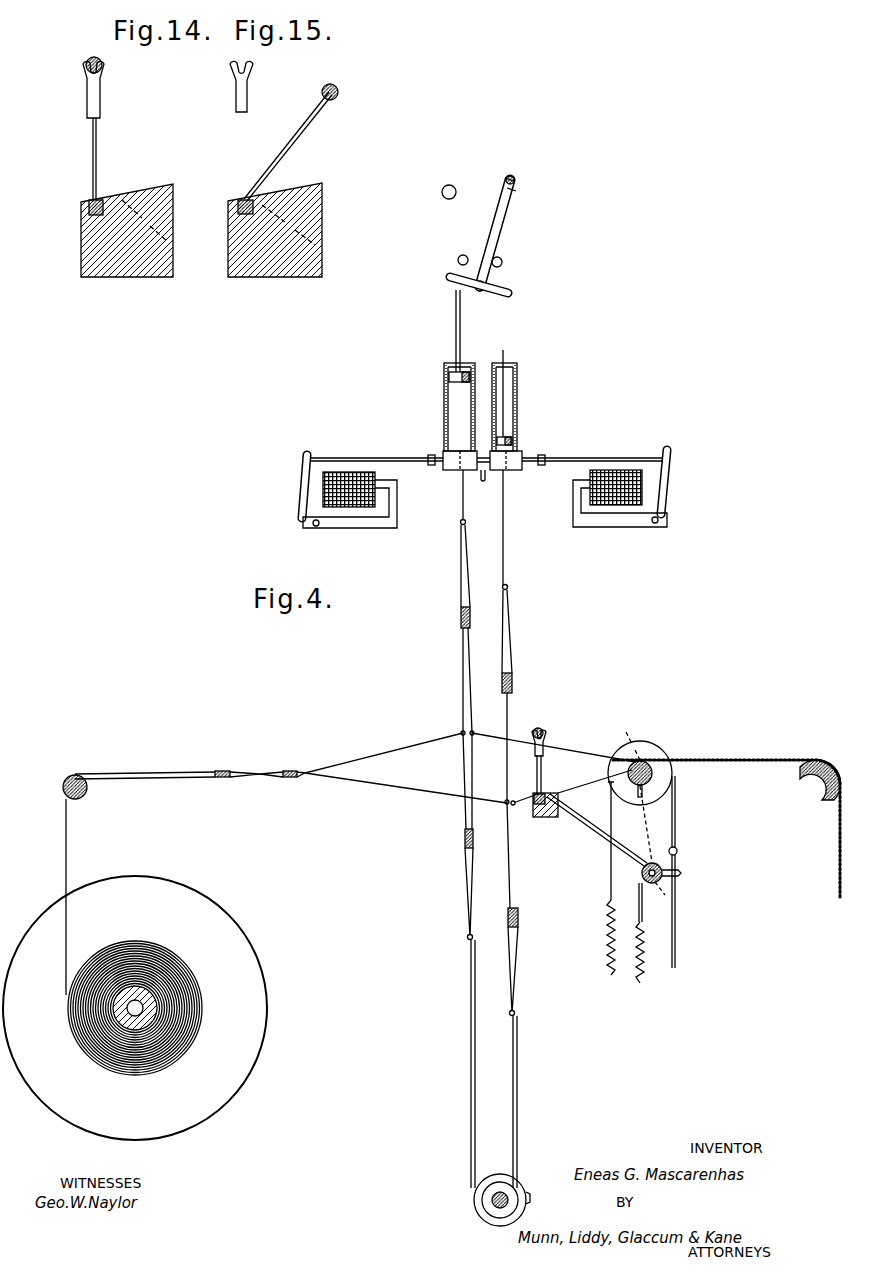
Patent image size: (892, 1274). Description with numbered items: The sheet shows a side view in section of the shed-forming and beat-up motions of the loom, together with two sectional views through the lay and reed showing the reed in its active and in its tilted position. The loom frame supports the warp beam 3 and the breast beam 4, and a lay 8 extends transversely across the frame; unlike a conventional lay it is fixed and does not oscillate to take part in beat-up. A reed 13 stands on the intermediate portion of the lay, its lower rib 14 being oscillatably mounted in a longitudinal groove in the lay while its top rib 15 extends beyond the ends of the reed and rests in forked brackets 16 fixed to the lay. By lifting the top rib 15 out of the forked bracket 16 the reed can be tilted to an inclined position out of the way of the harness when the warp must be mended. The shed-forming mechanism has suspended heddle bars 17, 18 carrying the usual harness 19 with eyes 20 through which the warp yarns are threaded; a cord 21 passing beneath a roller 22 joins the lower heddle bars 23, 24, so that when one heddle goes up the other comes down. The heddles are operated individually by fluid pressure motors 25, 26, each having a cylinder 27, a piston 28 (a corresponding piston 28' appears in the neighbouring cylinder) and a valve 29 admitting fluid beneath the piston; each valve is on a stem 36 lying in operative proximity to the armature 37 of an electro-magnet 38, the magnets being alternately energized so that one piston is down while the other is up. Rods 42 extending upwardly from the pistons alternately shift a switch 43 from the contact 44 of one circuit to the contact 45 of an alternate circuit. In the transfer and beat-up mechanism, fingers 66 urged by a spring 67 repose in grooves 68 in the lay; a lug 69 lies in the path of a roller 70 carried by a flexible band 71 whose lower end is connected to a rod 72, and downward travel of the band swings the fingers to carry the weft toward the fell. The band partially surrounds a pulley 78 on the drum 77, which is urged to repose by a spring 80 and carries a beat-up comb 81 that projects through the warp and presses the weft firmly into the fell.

In FIG. 4, the warp beam 3 is at (120, 1012).
In FIG. 4, the breast beam 4 is at (812, 786).
In FIG. 14, the lay 8 is at (76, 263).
In FIG. 15, the lay 8 is at (223, 263).
In FIG. 4, the lay 8 is at (548, 818).
In FIG. 14, the reed 13 is at (97, 150).
In FIG. 15, the reed 13 is at (296, 140).
In FIG. 4, the reed 13 is at (542, 776).
In FIG. 14, the lower rib 14 is at (89, 210).
In FIG. 15, the lower rib 14 is at (245, 200).
In FIG. 4, the lower rib 14 is at (535, 795).
In FIG. 14, the top rib 15 is at (94, 57).
In FIG. 15, the top rib 15 is at (340, 86).
In FIG. 4, the top rib 15 is at (543, 728).
In FIG. 14, the forked bracket 16 is at (100, 103).
In FIG. 15, the forked bracket 16 is at (236, 92).
In FIG. 4, the forked bracket 16 is at (546, 745).
In FIG. 4, the heddle bar 17 is at (460, 616).
In FIG. 4, the heddle bar 18 is at (513, 688).
In FIG. 4, the harness 19 is at (462, 712).
In FIG. 4, the eye 20 is at (462, 738).
In FIG. 4, the cord 21 is at (470, 1070).
In FIG. 4, the roller 22 is at (500, 1178).
In FIG. 4, the lower heddle bar 23 is at (465, 838).
In FIG. 4, the lower heddle bar 24 is at (518, 914).
In FIG. 4, the fluid pressure motor 25 is at (523, 413).
In FIG. 4, the fluid pressure motor 26 is at (439, 407).
In FIG. 4, the cylinder 27 is at (517, 386).
In FIG. 4, the piston 28 is at (436, 375).
In FIG. 4, the piston 28' is at (525, 433).
In FIG. 4, the valve 29 is at (527, 463).
In FIG. 4, the stem 36 is at (405, 457).
In FIG. 4, the armature 37 is at (300, 490).
In FIG. 4, the electro-magnet 38 is at (340, 470).
In FIG. 4, the rod 42 is at (456, 340).
In FIG. 4, the switch 43 is at (499, 228).
In FIG. 4, the contact 44 is at (515, 188).
In FIG. 4, the contact 45 is at (449, 185).
In FIG. 4, the finger 66 is at (640, 815).
In FIG. 4, the spring 67 is at (638, 976).
In FIG. 14, the groove 68 is at (155, 197).
In FIG. 15, the groove 68 is at (317, 222).
In FIG. 4, the groove 68 is at (559, 798).
In FIG. 4, the lug 69 is at (682, 873).
In FIG. 4, the roller 70 is at (686, 847).
In FIG. 4, the flexible band 71 is at (654, 746).
In FIG. 4, the rod 72 is at (676, 936).
In FIG. 4, the drum 77 is at (652, 773).
In FIG. 4, the pulley 78 is at (666, 755).
In FIG. 4, the spring 80 is at (606, 960).
In FIG. 4, the beat-up comb 81 is at (686, 800).